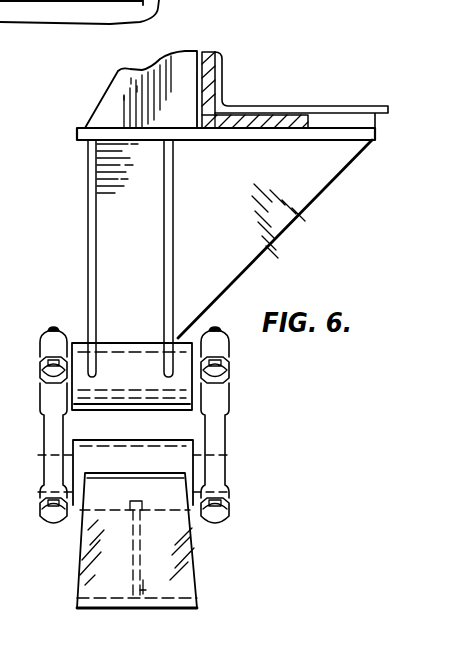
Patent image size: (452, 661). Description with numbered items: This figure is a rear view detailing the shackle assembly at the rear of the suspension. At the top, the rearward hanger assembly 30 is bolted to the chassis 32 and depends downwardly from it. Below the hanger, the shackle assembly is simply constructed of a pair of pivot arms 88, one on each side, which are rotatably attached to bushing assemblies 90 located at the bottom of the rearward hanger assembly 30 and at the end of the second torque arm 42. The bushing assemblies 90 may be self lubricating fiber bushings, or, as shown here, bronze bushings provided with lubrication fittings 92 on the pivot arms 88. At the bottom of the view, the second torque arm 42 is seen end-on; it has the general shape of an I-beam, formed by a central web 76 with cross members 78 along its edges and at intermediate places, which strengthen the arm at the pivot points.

The rearward hanger assembly 30 is at (84, 232).
The chassis 32 is at (201, 52).
The second torque arm 42 is at (78, 612).
The central web 76 is at (143, 590).
The cross members 78 is at (155, 610).
The pivot arms 88 is at (45, 428).
The bushing assemblies 90 is at (120, 412).
The lubrication fittings 92 is at (42, 382).